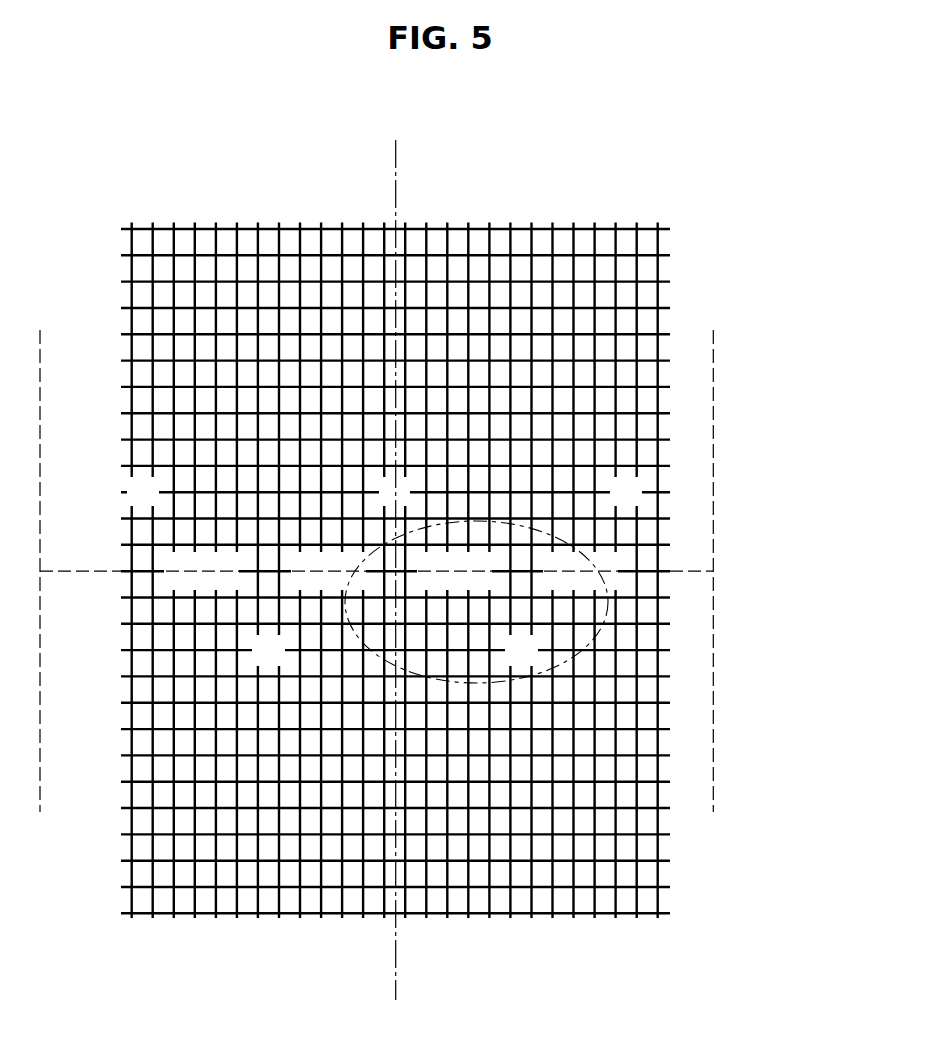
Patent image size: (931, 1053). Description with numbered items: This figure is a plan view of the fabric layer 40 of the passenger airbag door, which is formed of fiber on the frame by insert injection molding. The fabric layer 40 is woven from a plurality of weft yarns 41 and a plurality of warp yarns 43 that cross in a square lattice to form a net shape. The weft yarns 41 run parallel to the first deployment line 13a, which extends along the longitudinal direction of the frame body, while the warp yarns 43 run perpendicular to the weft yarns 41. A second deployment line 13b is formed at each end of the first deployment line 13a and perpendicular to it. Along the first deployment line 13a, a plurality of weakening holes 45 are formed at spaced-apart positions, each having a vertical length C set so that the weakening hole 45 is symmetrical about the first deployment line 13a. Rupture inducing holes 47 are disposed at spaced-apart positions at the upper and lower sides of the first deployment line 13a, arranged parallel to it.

The fabric layer 40 is at (108, 120).
The weft yarn 41 is at (667, 307).
The warp yarn 43 is at (532, 222).
The weakening hole 45 is at (465, 579).
The rupture inducing hole 47 is at (516, 647).
The first deployment line 13a is at (693, 572).
The second deployment line 13b is at (713, 465).
The vertical length of the weakening hole C is at (562, 662).